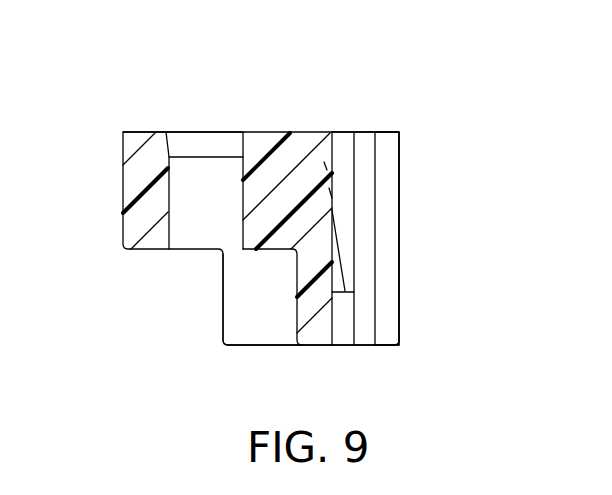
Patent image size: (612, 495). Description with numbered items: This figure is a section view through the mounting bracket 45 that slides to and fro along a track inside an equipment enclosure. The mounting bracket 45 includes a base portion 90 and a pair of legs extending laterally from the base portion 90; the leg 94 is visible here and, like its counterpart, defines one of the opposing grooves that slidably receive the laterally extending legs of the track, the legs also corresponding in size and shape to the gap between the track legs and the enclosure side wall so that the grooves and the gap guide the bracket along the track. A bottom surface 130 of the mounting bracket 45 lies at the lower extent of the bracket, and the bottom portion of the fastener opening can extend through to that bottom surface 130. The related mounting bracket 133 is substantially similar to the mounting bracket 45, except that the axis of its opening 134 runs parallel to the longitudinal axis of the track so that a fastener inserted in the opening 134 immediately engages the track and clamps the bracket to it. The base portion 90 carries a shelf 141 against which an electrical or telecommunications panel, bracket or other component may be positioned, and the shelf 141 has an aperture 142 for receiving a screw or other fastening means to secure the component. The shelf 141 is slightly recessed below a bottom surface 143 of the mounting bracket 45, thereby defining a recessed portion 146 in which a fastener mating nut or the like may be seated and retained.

The mounting bracket 45 is at (395, 118).
The base portion 90 is at (292, 160).
The leg 94 is at (395, 173).
The bottom surface 130 is at (318, 344).
The mounting bracket 133 is at (158, 128).
The opening 134 is at (362, 130).
The shelf 141 is at (148, 131).
The aperture 142 is at (170, 192).
The bottom surface 143 is at (263, 310).
The recessed portion 146 is at (143, 291).